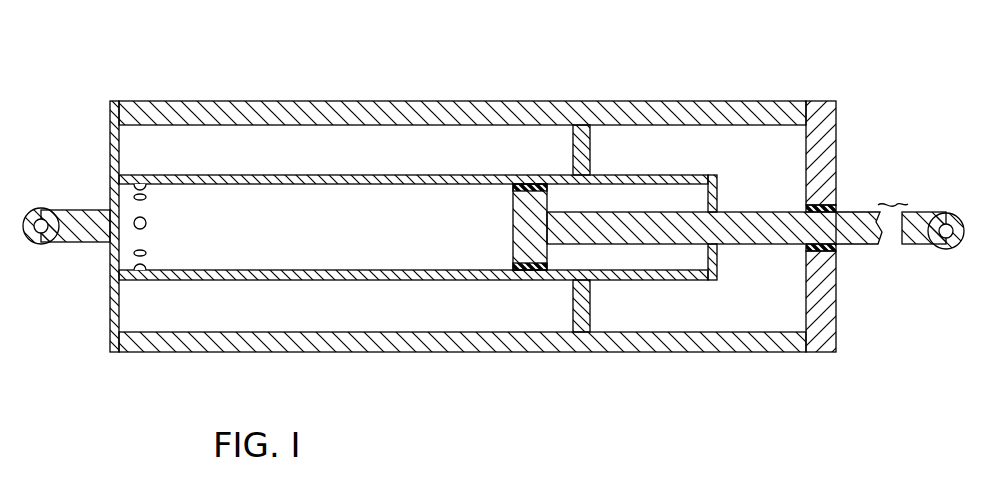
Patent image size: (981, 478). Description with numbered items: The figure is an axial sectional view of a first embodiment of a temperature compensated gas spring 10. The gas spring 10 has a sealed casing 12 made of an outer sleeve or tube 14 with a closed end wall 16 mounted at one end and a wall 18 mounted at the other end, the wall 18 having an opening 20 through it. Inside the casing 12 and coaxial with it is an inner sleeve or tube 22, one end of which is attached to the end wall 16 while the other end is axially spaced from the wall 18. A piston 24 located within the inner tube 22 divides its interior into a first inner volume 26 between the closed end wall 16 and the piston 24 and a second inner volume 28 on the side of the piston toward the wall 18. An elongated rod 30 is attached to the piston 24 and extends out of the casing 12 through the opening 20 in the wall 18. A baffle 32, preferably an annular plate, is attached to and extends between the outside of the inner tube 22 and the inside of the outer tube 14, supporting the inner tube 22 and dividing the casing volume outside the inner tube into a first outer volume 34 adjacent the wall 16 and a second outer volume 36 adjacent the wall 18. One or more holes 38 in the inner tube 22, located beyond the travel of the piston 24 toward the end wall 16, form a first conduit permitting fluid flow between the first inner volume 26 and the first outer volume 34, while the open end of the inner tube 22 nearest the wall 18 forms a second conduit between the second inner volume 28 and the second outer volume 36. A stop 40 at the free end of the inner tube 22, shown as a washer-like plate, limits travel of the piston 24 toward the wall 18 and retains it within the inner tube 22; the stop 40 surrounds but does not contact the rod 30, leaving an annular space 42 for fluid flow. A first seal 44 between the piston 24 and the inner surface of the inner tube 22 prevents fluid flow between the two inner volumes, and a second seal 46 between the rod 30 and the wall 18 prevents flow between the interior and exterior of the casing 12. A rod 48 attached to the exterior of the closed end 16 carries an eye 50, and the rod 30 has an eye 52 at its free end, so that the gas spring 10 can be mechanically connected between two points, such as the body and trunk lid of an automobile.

The gas spring 10 is at (117, 78).
The sealed casing 12 is at (428, 230).
The outer sleeve or tube 14 is at (310, 101).
The closed end wall 16 is at (110, 148).
The wall 18 is at (836, 139).
The opening 20 is at (900, 234).
The inner sleeve or tube 22 is at (378, 176).
The piston 24 is at (513, 214).
The first inner volume 26 is at (260, 243).
The second inner volume 28 is at (634, 205).
The elongated rod 30 is at (668, 240).
The baffle 32 is at (590, 131).
The first outer volume 34 is at (192, 143).
The second outer volume 36 is at (740, 148).
The holes 38 is at (136, 228).
The stop 40 is at (718, 250).
The annular space 42 is at (752, 244).
The first seal 44 is at (512, 187).
The second seal 46 is at (836, 207).
The rod 48 is at (66, 228).
The eye 50 is at (41, 225).
The eye 52 is at (946, 214).